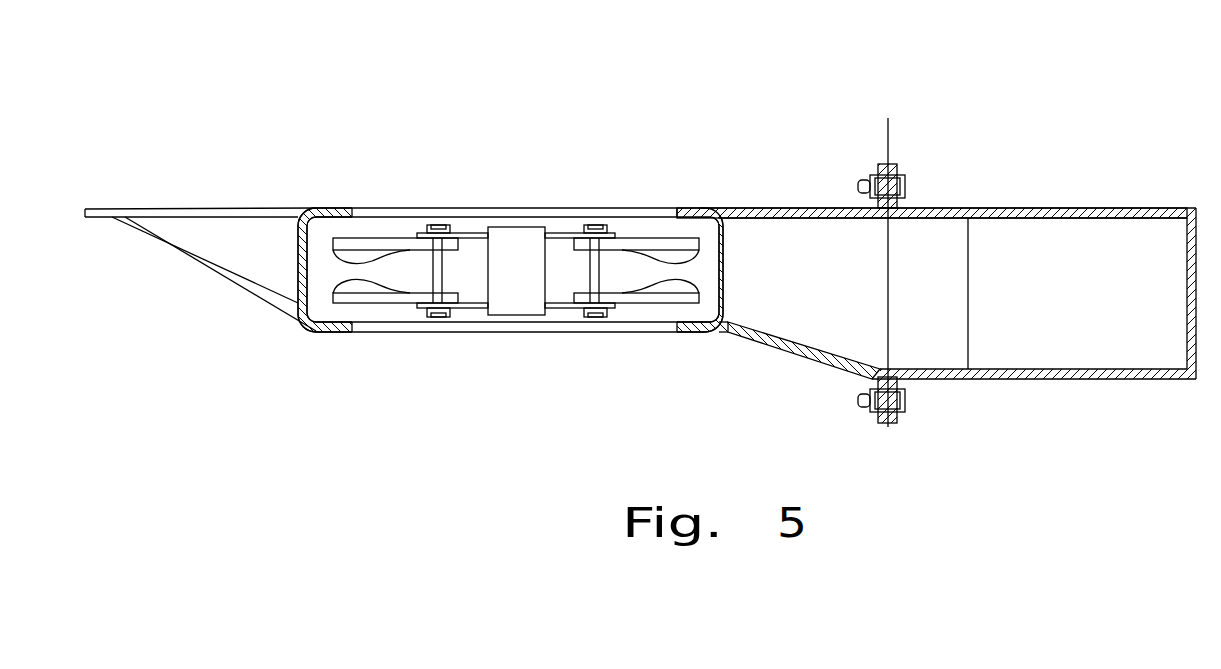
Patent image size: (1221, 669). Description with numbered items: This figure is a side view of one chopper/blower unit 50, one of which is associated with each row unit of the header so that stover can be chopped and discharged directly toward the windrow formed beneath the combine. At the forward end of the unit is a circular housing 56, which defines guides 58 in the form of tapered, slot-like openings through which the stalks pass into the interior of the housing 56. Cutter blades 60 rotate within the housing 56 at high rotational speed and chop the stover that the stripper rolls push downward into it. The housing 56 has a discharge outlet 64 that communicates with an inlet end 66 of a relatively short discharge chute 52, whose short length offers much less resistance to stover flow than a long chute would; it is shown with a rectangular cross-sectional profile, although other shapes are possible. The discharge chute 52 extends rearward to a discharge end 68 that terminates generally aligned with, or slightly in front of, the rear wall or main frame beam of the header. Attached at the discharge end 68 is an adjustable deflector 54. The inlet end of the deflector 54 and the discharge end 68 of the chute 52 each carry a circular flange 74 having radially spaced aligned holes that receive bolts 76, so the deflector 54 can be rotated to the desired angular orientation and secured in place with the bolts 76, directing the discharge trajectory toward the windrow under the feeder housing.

The chopper/blower unit 50 is at (766, 108).
The discharge chute 52 is at (823, 208).
The deflector 54 is at (1094, 209).
The housing 56 is at (322, 332).
The guide 58 is at (212, 208).
The cutter blade 60 is at (640, 240).
The discharge outlet 64 is at (718, 297).
The inlet end 66 is at (720, 208).
The discharge end 68 is at (855, 372).
The circular flange 74 is at (888, 118).
The bolt 76 is at (905, 186).